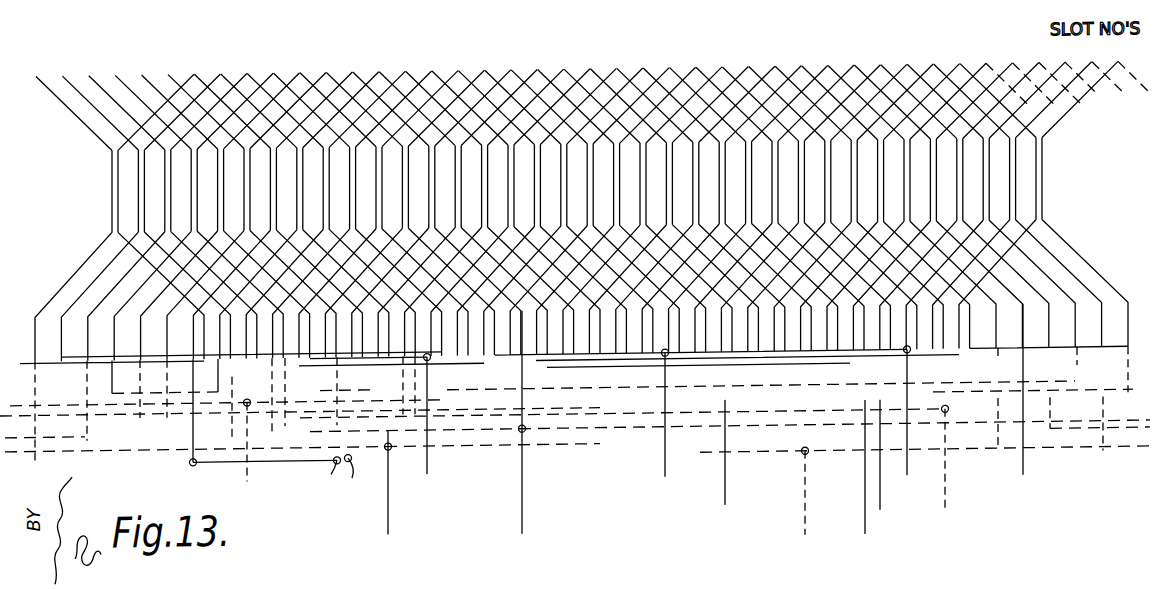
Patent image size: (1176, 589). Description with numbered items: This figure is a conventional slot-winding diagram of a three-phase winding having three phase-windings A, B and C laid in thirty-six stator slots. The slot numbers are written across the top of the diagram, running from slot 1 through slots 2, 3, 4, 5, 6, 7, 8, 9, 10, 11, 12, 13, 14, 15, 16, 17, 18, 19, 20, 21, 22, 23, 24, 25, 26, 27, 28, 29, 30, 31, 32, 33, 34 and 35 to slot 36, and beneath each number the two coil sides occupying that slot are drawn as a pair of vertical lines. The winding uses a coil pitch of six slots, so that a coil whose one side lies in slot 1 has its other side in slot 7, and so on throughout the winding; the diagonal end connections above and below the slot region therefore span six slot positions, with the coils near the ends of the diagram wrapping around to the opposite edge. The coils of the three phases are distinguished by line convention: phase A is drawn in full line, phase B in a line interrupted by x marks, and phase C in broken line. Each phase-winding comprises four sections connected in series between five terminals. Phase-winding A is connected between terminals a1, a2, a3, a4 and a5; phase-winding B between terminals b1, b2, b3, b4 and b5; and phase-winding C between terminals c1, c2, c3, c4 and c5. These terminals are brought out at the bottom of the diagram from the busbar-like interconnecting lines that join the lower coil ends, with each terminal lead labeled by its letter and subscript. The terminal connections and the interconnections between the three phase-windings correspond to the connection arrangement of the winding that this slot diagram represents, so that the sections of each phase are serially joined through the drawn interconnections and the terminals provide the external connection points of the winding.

The slot 1 is at (119, 193).
The slot 2 is at (145, 193).
The slot 3 is at (172, 192).
The slot 4 is at (198, 192).
The slot 5 is at (225, 192).
The slot 6 is at (251, 191).
The slot 7 is at (277, 191).
The slot 8 is at (304, 191).
The slot 9 is at (330, 190).
The slot 10 is at (357, 190).
The slot 11 is at (383, 189).
The slot 12 is at (409, 189).
The slot 13 is at (436, 189).
The slot 14 is at (462, 188).
The slot 15 is at (489, 188).
The slot 16 is at (515, 188).
The slot 17 is at (541, 187).
The slot 18 is at (568, 187).
The slot 19 is at (594, 187).
The slot 20 is at (621, 186).
The slot 21 is at (647, 186).
The slot 22 is at (673, 185).
The slot 23 is at (700, 185).
The slot 24 is at (726, 185).
The slot 25 is at (753, 184).
The slot 26 is at (779, 184).
The slot 27 is at (805, 184).
The slot 28 is at (832, 183).
The slot 29 is at (858, 183).
The slot 30 is at (885, 182).
The slot 31 is at (911, 182).
The slot 32 is at (937, 182).
The slot 33 is at (964, 181).
The slot 34 is at (990, 181).
The slot 35 is at (1017, 181).
The slot 36 is at (1043, 180).
The terminal a1 is at (1020, 401).
The terminal a2 is at (430, 427).
The terminal a3 is at (667, 426).
The terminal a4 is at (905, 422).
The terminal a5 is at (189, 468).
The terminal b1 is at (883, 465).
The terminal b2 is at (260, 455).
The terminal b3 is at (725, 464).
The terminal b4 is at (945, 470).
The terminal b5 is at (363, 476).
The terminal c1 is at (864, 479).
The terminal c2 is at (519, 434).
The terminal c3 is at (389, 494).
The terminal c4 is at (804, 505).
The terminal c5 is at (324, 477).